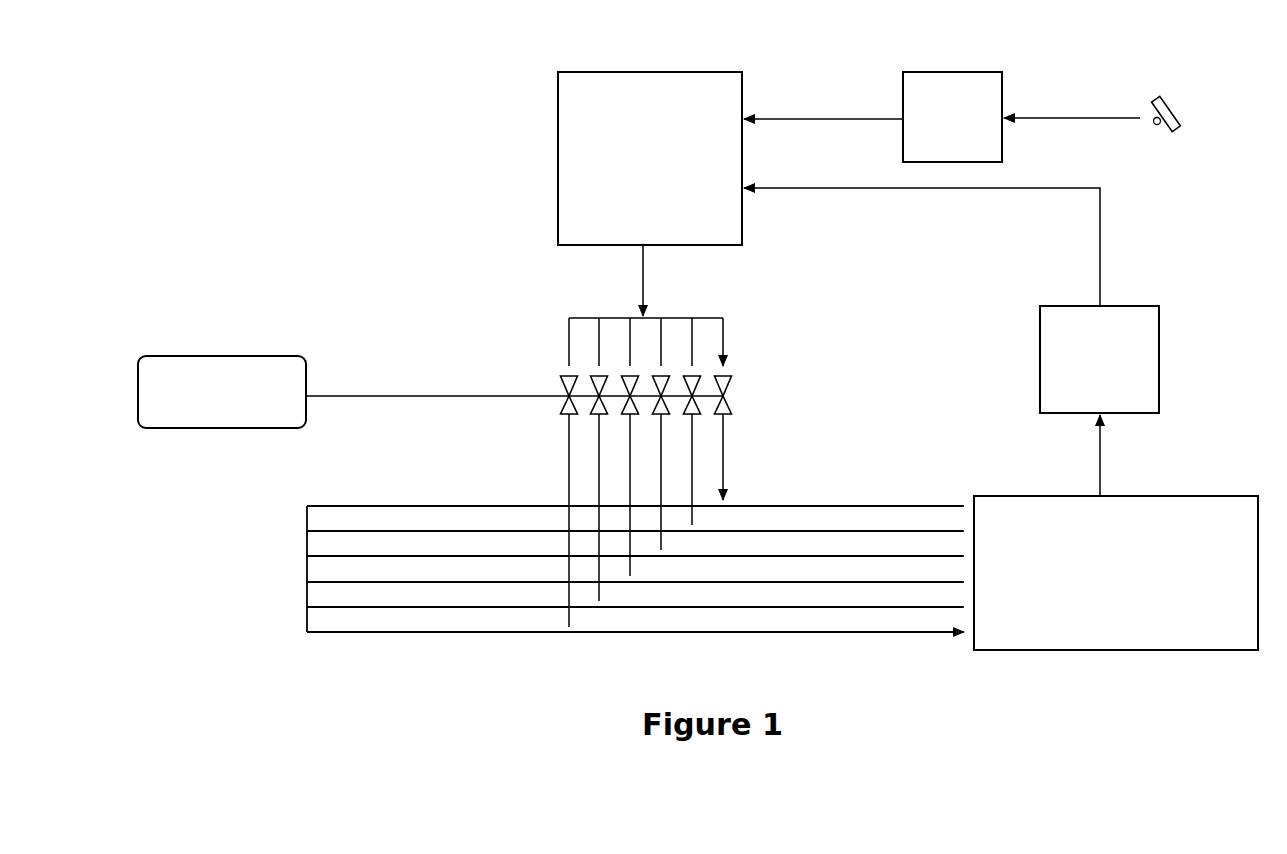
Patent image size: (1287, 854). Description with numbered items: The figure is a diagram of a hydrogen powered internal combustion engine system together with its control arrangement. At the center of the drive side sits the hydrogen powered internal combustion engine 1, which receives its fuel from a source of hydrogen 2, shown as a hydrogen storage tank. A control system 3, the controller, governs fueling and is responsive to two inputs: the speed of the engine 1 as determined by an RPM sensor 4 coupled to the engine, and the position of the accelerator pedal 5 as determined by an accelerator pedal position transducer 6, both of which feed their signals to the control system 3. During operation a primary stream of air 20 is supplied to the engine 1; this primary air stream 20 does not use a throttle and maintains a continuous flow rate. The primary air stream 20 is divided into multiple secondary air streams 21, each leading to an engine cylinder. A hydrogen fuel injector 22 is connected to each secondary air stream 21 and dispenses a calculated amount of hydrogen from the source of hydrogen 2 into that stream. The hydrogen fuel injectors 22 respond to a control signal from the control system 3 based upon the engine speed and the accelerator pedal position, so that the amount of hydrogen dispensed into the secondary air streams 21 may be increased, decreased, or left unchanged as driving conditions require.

The hydrogen powered internal combustion engine 1 is at (1116, 573).
The source of hydrogen 2 is at (217, 350).
The control system 3 is at (650, 158).
The RPM sensor 4 is at (1170, 350).
The accelerator pedal 5 is at (1183, 108).
The accelerator pedal position transducer 6 is at (953, 63).
The primary stream of air 20 is at (286, 565).
The secondary air streams 21 is at (558, 477).
The hydrogen fuel injector 22 is at (725, 407).